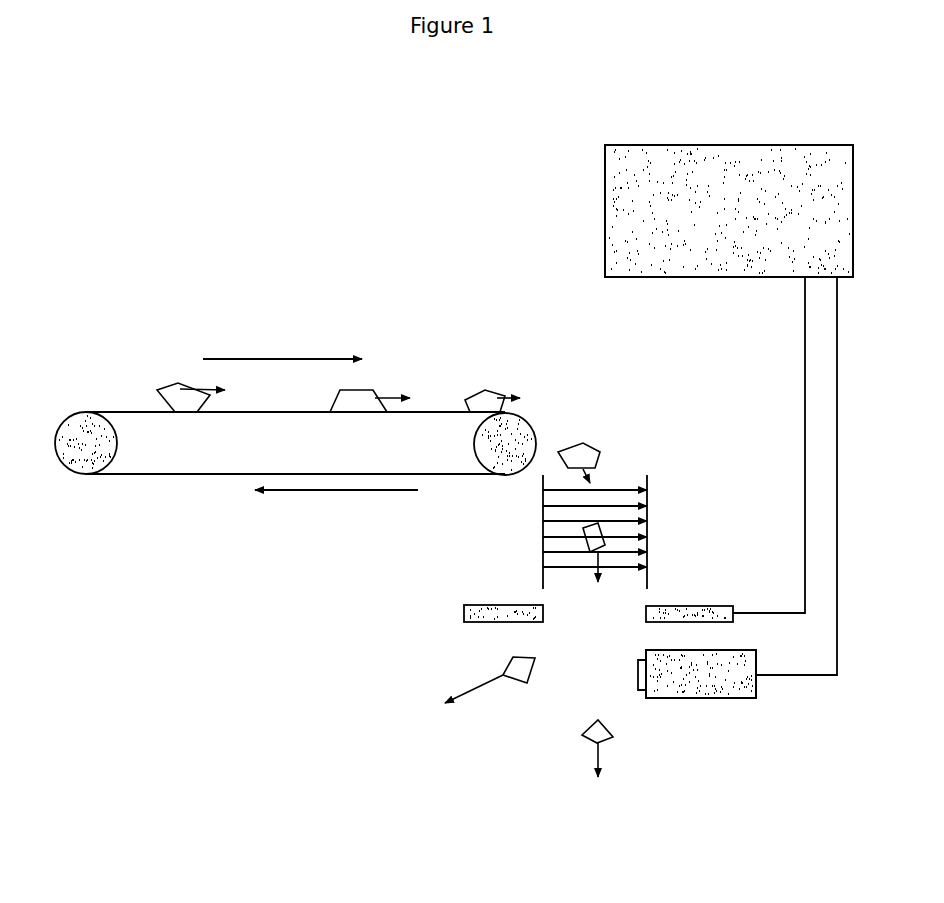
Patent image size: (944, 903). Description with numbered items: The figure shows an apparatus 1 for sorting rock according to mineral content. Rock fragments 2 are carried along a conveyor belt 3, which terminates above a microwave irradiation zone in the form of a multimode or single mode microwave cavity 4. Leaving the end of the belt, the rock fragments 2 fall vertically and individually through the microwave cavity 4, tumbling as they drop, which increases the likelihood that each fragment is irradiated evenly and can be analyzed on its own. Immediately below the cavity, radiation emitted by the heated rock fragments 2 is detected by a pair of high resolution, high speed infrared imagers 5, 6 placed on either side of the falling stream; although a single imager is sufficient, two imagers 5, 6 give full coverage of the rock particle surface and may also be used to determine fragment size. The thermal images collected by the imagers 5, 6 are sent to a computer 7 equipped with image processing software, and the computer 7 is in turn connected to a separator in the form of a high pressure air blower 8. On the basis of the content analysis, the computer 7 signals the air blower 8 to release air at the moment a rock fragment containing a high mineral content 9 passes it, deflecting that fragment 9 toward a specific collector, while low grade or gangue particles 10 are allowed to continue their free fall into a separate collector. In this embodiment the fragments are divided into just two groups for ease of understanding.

The apparatus 1 is at (397, 290).
The rock fragments 2 is at (340, 392).
The conveyor belt 3 is at (80, 458).
The microwave cavity 4 is at (542, 528).
The infrared imager 5 is at (464, 612).
The infrared imager 6 is at (734, 604).
The computer 7 is at (605, 235).
The high pressure air blower 8 is at (752, 692).
The rock fragment containing a high mineral content 9 is at (520, 683).
The low grade or gangue particles 10 is at (612, 737).